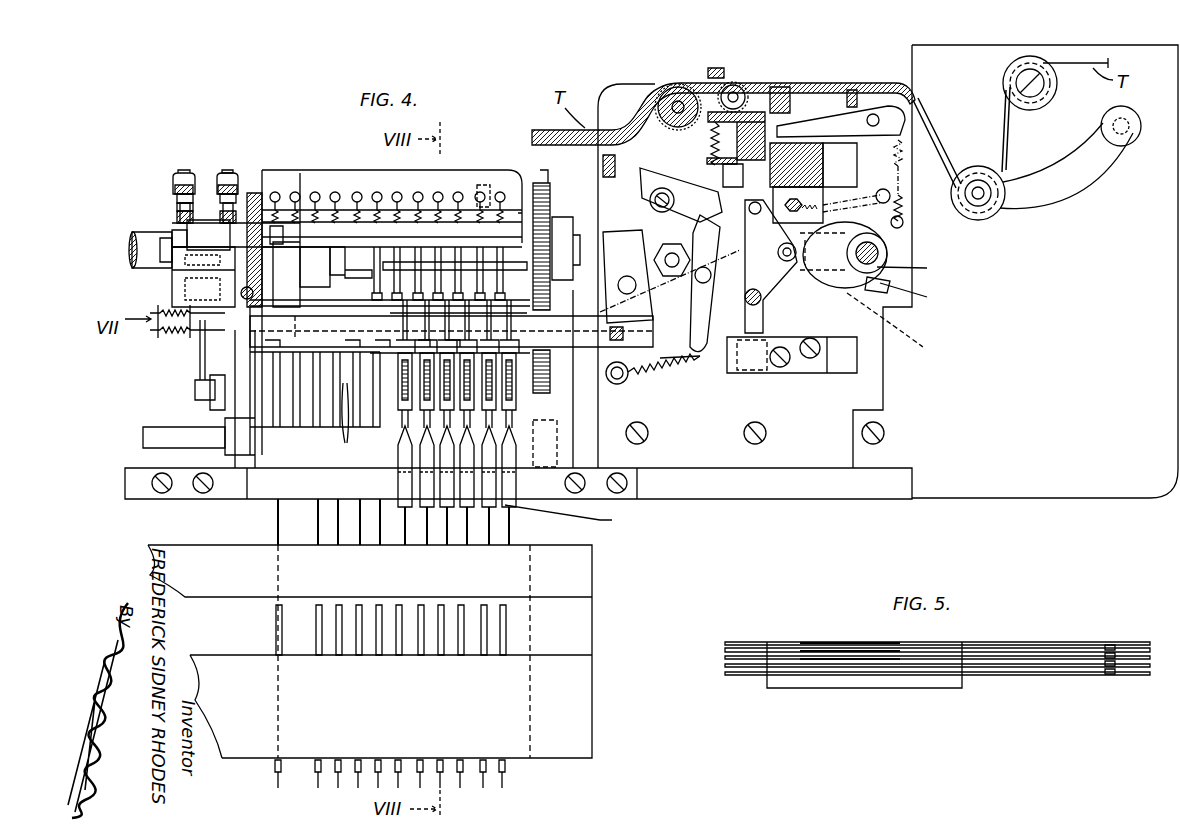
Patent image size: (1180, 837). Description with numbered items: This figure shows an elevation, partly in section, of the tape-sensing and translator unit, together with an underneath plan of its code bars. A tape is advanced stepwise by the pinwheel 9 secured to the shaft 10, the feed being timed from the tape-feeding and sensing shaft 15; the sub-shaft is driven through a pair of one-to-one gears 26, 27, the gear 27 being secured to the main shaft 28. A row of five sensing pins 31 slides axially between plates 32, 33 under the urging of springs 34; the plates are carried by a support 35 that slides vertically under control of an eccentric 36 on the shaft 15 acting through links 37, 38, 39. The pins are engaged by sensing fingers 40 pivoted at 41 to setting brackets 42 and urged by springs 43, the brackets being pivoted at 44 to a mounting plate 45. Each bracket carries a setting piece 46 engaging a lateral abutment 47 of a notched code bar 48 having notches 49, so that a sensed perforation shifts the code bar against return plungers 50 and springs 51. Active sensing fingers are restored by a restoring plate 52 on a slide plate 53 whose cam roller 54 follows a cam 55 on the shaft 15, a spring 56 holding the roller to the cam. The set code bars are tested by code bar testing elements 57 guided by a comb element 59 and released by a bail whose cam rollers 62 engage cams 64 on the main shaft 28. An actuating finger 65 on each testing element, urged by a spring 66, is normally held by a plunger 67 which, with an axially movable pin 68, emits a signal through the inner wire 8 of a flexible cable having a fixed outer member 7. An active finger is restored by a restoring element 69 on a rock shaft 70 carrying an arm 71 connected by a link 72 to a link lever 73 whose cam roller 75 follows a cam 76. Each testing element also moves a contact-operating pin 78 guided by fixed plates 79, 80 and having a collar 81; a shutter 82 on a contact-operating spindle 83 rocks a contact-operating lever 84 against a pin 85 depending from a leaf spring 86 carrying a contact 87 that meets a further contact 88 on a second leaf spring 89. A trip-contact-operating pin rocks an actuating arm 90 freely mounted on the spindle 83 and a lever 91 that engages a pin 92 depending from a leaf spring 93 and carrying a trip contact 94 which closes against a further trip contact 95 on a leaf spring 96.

In FIG. 4, the outer member 7 is at (505, 768).
In FIG. 4, the inner wire 8 is at (505, 782).
In FIG. 4, the pinwheel 9 is at (668, 85).
In FIG. 4, the shaft 10 is at (656, 104).
In FIG. 4, the tape-feeding and sensing shaft 15 is at (891, 322).
In FIG. 4, the gear 26 is at (545, 388).
In FIG. 4, the gear 27 is at (538, 182).
In FIG. 4, the main shaft 28 is at (130, 250).
In FIG. 4, the sensing pins 31 is at (700, 78).
In FIG. 4, the plate 32 is at (738, 82).
In FIG. 4, the plate 33 is at (707, 161).
In FIG. 4, the springs 34 is at (712, 137).
In FIG. 4, the support 35 is at (770, 328).
In FIG. 4, the eccentric 36 is at (872, 295).
In FIG. 4, the link 37 is at (850, 280).
In FIG. 4, the link 38 is at (772, 283).
In FIG. 4, the link 39 is at (826, 202).
In FIG. 4, the sensing fingers 40 is at (690, 190).
In FIG. 4, the pivot 41 is at (712, 288).
In FIG. 4, the setting brackets 42 is at (678, 290).
In FIG. 4, the springs 43 is at (670, 370).
In FIG. 4, the pivot 44 is at (627, 276).
In FIG. 4, the mounting plate 45 is at (716, 455).
In FIG. 4, the setting piece 46 is at (630, 244).
In FIG. 4, the lateral abutment 47 is at (665, 360).
In FIG. 5, the lateral abutment 47 is at (1110, 675).
In FIG. 4, the notched code bar 48 is at (622, 382).
In FIG. 5, the notched code bar 48 is at (1048, 652).
In FIG. 4, the notches 49 is at (345, 338).
In FIG. 5, the notches 49 is at (848, 642).
In FIG. 4, the return plungers 50 is at (203, 345).
In FIG. 4, the springs 51 is at (185, 338).
In FIG. 4, the restoring plate 52 is at (649, 200).
In FIG. 4, the slide plate 53 is at (914, 296).
In FIG. 4, the cam roller 54 is at (892, 212).
In FIG. 4, the cam 55 is at (912, 265).
In FIG. 4, the spring 56 is at (881, 191).
In FIG. 4, the code bar testing elements 57 is at (340, 424).
In FIG. 4, the comb element 59 is at (318, 432).
In FIG. 4, the cam rollers 62 is at (300, 330).
In FIG. 4, the cams 64 is at (483, 200).
In FIG. 4, the actuating finger 65 is at (569, 475).
In FIG. 4, the spring 66 is at (427, 390).
In FIG. 4, the plunger 67 is at (505, 525).
In FIG. 4, the axially movable pin 68 is at (508, 628).
In FIG. 4, the restoring element 69 is at (262, 478).
In FIG. 4, the rock shaft 70 is at (150, 440).
In FIG. 4, the arm 71 is at (232, 425).
In FIG. 4, the link 72 is at (210, 395).
In FIG. 4, the link lever 73 is at (215, 372).
In FIG. 4, the cam roller 75 is at (200, 270).
In FIG. 4, the cam 76 is at (200, 294).
In FIG. 4, the contact-operating pin 78 is at (362, 278).
In FIG. 4, the fixed plate 79 is at (468, 265).
In FIG. 4, the fixed plate 80 is at (392, 313).
In FIG. 4, the collar 81 is at (392, 290).
In FIG. 4, the shutter 82 is at (346, 222).
In FIG. 4, the contact-operating spindle 83 is at (160, 245).
In FIG. 4, the contact-operating lever 84 is at (180, 236).
In FIG. 4, the pin 85 is at (177, 216).
In FIG. 4, the leaf spring 86 is at (178, 206).
In FIG. 4, the electrical contact 87 is at (178, 196).
In FIG. 4, the further contact 88 is at (180, 185).
In FIG. 4, the second leaf spring 89 is at (184, 173).
In FIG. 4, the actuating arm 90 is at (278, 200).
In FIG. 4, the lever 91 is at (255, 247).
In FIG. 4, the pin 92 is at (258, 195).
In FIG. 4, the leaf spring 93 is at (222, 185).
In FIG. 4, the electrical trip-contact 94 is at (238, 214).
In FIG. 4, the further trip contact 95 is at (234, 196).
In FIG. 4, the leaf spring 96 is at (228, 170).